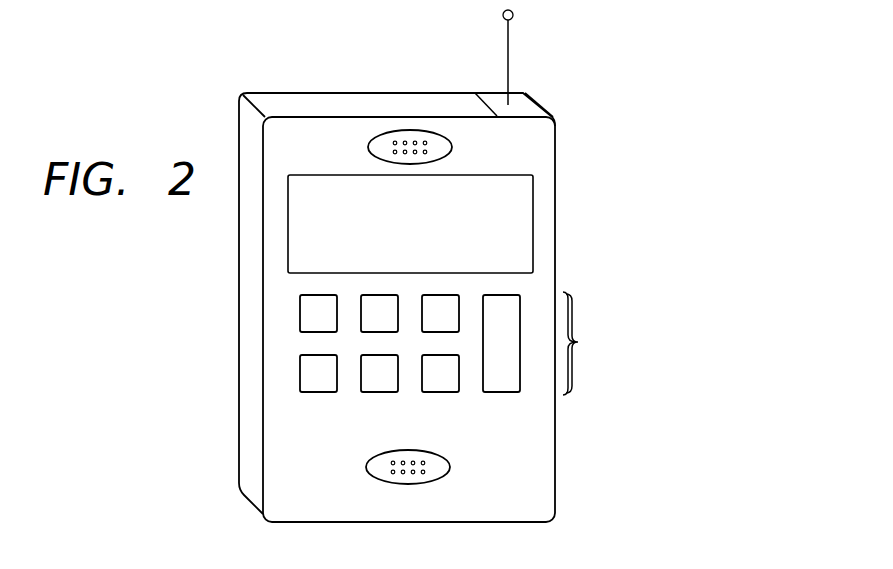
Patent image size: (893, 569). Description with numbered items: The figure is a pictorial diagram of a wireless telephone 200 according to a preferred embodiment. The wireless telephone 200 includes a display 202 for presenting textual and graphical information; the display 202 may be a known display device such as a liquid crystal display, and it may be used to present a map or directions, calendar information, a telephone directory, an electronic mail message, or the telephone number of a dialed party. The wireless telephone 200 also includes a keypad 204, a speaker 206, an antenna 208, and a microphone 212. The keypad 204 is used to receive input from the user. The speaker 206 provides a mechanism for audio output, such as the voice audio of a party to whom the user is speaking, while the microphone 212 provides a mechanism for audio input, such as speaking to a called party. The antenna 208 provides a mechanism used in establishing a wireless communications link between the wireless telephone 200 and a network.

The wireless telephone 200 is at (555, 145).
The display 202 is at (433, 236).
The keypad 204 is at (595, 343).
The speaker 206 is at (452, 147).
The antenna 208 is at (510, 63).
The microphone 212 is at (450, 467).